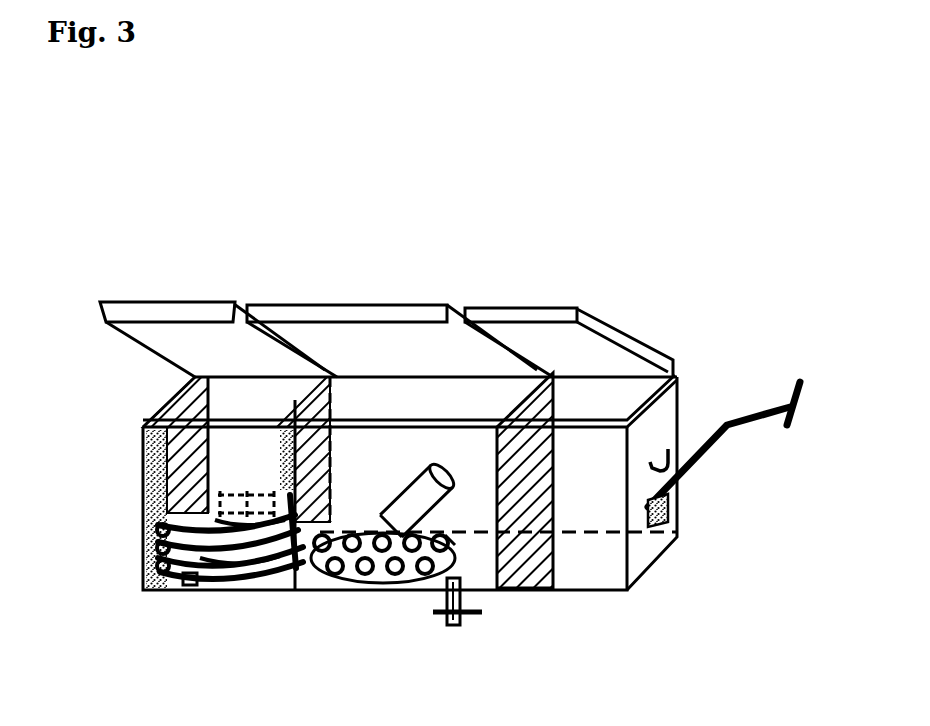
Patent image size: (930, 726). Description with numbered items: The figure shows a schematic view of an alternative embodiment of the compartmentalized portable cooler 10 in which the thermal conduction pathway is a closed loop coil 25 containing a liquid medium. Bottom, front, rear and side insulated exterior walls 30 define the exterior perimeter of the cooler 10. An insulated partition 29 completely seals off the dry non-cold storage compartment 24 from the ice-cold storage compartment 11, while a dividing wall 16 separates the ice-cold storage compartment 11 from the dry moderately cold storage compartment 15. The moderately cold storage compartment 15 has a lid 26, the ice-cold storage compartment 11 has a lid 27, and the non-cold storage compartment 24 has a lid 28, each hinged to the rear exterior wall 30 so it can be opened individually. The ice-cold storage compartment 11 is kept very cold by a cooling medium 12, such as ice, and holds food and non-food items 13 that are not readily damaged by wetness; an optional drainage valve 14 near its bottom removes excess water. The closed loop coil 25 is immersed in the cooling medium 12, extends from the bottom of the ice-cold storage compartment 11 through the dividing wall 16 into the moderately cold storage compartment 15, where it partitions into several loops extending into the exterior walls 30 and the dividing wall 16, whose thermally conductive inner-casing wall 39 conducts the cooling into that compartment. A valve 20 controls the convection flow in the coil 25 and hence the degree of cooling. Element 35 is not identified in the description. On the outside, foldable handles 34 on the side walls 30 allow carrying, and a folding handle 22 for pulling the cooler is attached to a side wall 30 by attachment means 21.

The compartmentalized cooler 10 is at (485, 218).
The lid 26 is at (190, 302).
The lid 27 is at (402, 305).
The lid 28 is at (562, 308).
The insulated exterior walls 30 is at (150, 487).
The insulated partition 29 is at (528, 540).
The dividing wall 16 is at (318, 405).
The dry non-cold storage compartment 24 is at (588, 495).
The thermostat 35 is at (298, 418).
The dry moderately cold storage compartment 15 is at (243, 462).
The valve 20 is at (192, 568).
The thermally conductive inner-casing wall 39 is at (227, 573).
The closed loop coil 25 is at (243, 510).
The ice-cold storage compartment 11 is at (371, 472).
The food and non-food items 13 is at (402, 518).
The cooling medium 12 is at (452, 550).
The drainage valve 14 is at (463, 627).
The folding handle 22 is at (742, 413).
The attachment means 21 is at (677, 537).
The foldable handles 34 is at (679, 440).